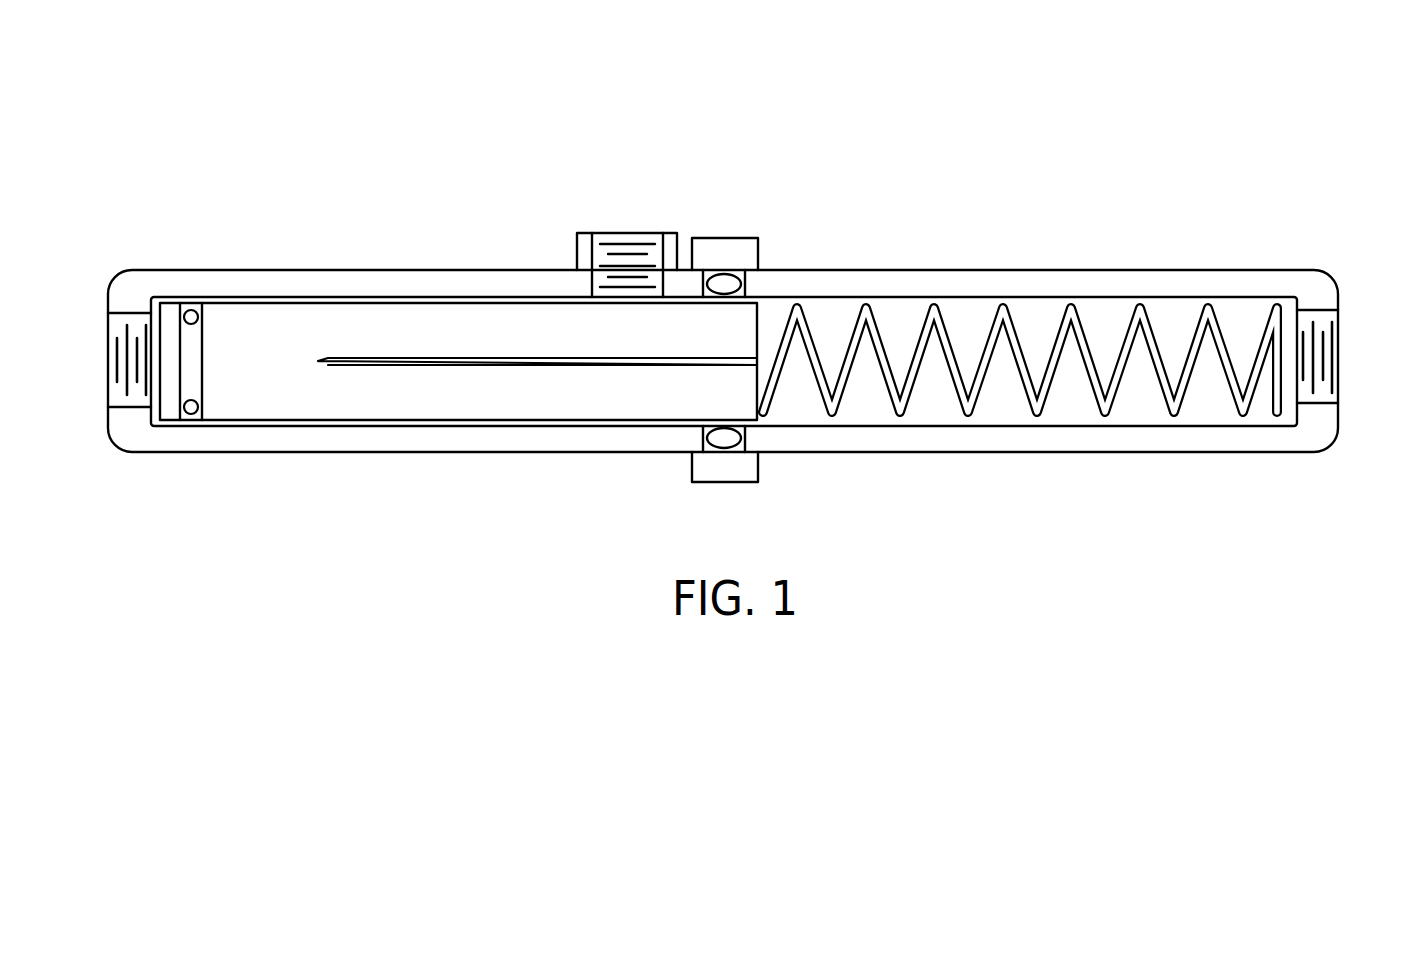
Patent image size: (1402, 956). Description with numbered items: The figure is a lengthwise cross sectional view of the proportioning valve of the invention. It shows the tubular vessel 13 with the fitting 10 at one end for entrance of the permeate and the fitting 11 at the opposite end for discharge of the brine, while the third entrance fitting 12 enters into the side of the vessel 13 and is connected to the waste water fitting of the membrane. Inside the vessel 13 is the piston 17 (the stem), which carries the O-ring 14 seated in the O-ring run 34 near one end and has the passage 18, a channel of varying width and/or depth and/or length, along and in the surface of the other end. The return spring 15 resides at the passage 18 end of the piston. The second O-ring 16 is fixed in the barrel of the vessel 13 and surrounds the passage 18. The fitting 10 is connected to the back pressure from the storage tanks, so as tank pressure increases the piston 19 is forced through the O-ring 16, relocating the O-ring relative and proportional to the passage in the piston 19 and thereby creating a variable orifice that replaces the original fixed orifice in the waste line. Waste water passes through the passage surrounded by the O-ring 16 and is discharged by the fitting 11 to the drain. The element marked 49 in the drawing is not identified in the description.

The fitting 10 is at (108, 360).
The fitting 11 is at (1340, 356).
The third entrance fitting 12 is at (627, 233).
The tubular vessel 13 is at (389, 268).
The O-ring 14 is at (200, 409).
The return spring 15 is at (1043, 418).
The second O-ring 16 is at (741, 434).
The piston 17 is at (458, 396).
The passage 18 is at (436, 367).
The piston 19 is at (721, 285).
The O-ring run 34 is at (196, 357).
The upper clamp roller 49 is at (743, 280).